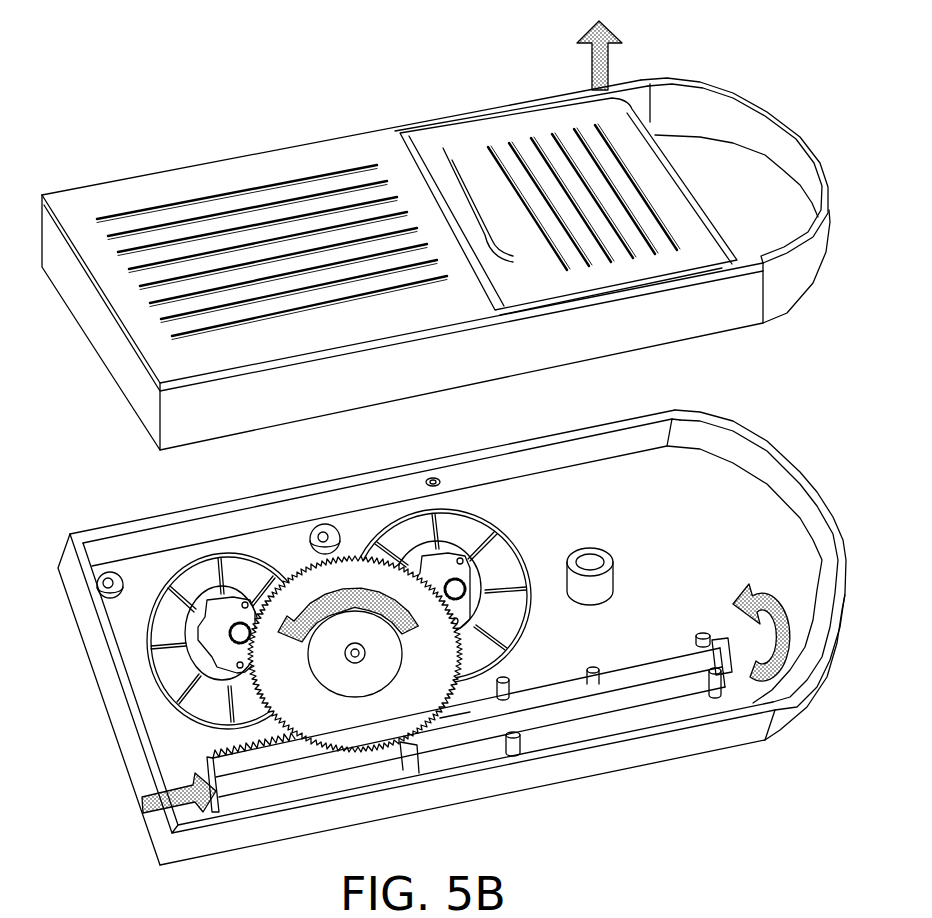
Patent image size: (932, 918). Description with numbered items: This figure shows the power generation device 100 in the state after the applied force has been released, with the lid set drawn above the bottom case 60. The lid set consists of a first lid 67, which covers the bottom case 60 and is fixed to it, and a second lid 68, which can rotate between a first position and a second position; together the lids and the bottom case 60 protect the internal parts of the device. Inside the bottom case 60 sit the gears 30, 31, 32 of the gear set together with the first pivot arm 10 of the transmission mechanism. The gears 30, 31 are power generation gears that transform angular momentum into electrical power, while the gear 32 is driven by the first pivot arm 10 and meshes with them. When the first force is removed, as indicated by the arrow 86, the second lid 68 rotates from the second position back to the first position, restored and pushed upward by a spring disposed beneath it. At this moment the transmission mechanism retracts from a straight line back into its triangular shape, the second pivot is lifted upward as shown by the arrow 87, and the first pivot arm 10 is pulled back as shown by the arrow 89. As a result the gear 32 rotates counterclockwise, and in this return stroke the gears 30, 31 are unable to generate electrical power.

The power generation device 100 is at (58, 134).
The bottom case 60 is at (805, 131).
The first lid 67 is at (200, 165).
The second lid 68 is at (547, 128).
The arrow 86 is at (610, 46).
The arrow 87 is at (767, 610).
The arrow 89 is at (142, 799).
The gear 30 is at (403, 512).
The gear 31 is at (214, 553).
The gear 32 is at (300, 557).
The first pivot arm 10 is at (257, 800).